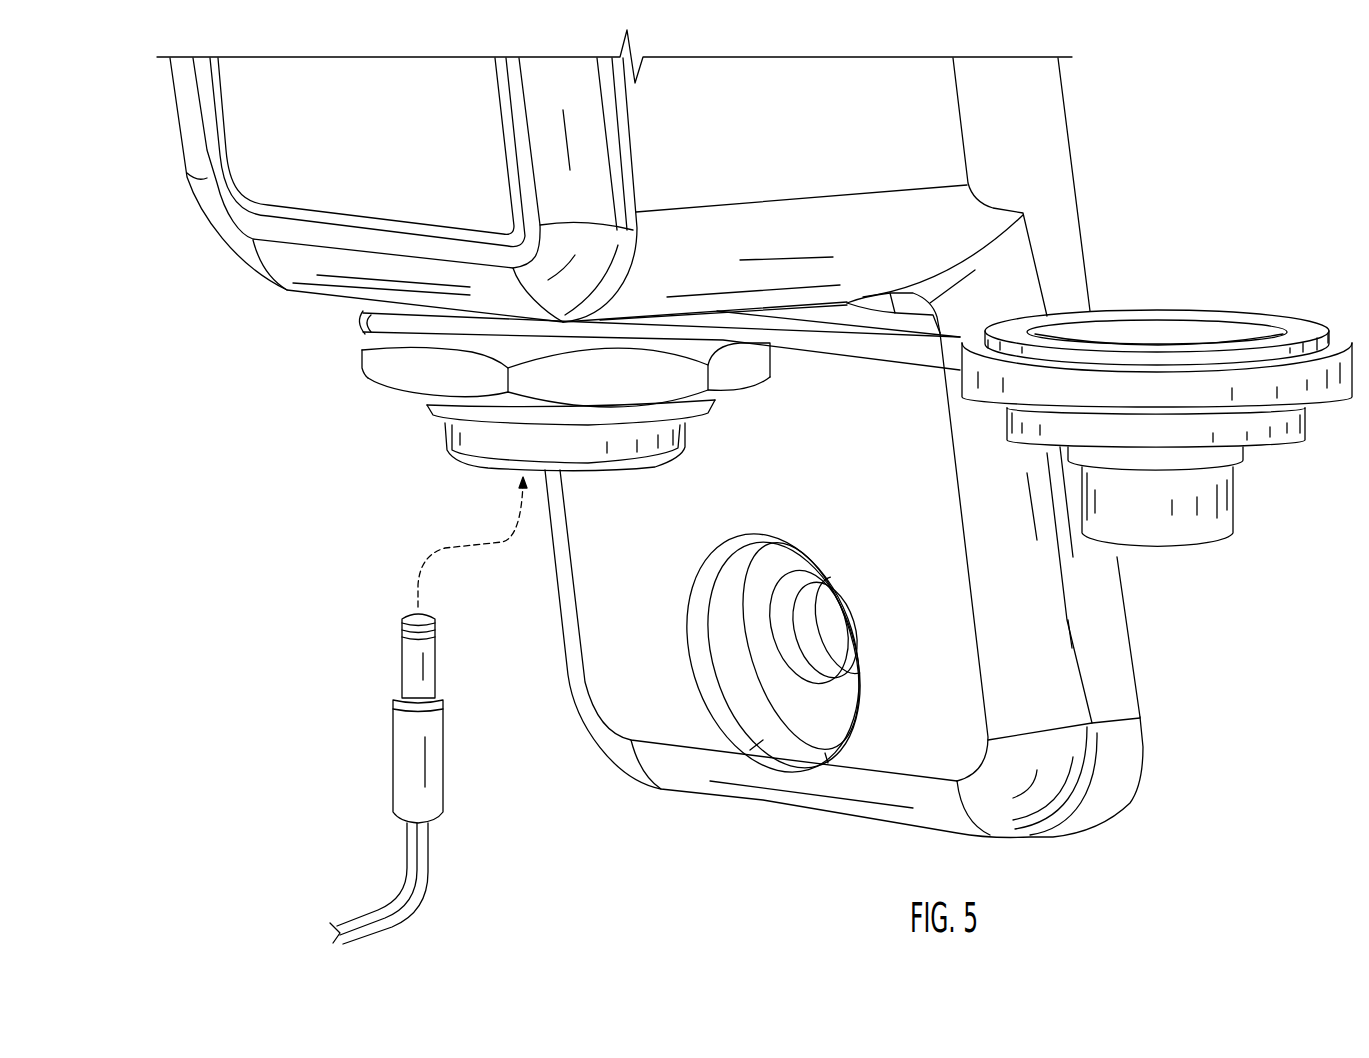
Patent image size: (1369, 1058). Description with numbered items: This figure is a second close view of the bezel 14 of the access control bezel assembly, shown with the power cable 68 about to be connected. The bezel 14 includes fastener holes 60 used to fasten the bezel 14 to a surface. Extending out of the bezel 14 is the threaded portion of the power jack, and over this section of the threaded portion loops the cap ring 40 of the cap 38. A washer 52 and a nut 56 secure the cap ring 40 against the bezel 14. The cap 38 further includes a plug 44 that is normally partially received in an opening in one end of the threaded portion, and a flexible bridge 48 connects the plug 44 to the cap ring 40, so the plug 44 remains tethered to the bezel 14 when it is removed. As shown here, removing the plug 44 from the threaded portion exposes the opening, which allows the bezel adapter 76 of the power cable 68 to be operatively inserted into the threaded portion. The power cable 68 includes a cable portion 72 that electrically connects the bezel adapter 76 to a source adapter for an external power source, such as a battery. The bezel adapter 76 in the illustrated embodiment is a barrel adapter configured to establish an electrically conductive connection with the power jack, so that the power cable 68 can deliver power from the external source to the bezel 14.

The bezel 14 is at (213, 240).
The cap 38 is at (850, 386).
The cap ring 40 is at (365, 306).
The plug 44 is at (1283, 447).
The flexible bridge 48 is at (890, 362).
The washer 52 is at (363, 322).
The nut 56 is at (363, 367).
The fastener holes 60 is at (803, 775).
The power cable 68 is at (281, 827).
The cable portion 72 is at (425, 902).
The bezel adapter 76 is at (393, 725).